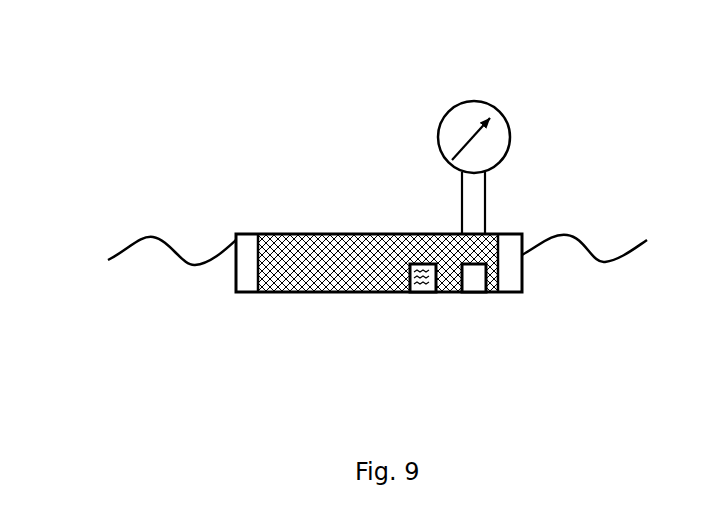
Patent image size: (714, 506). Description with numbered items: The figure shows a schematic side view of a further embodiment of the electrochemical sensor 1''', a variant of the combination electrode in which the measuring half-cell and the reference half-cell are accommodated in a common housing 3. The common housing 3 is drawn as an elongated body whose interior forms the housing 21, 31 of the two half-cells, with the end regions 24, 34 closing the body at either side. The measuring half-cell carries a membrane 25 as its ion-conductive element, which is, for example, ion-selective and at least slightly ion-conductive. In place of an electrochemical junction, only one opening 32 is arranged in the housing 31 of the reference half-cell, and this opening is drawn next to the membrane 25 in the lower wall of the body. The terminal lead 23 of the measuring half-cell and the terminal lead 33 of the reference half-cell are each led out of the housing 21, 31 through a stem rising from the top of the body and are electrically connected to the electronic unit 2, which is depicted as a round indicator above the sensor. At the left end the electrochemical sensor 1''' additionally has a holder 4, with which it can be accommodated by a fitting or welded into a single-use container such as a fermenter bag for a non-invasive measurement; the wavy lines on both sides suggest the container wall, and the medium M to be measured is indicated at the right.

The electrochemical sensor 1''' is at (345, 194).
The electronic unit 2 is at (432, 132).
The common housing 3 is at (292, 297).
The holder 4 is at (235, 240).
The housing of the measuring half-cell 21 is at (374, 234).
The housing of the reference half-cell 31 is at (357, 238).
The terminal lead of the measuring half-cell 23 is at (461, 215).
The terminal lead of the reference half-cell 33 is at (487, 215).
The first end closure 24 is at (367, 218).
The second end closure 34 is at (282, 243).
The membrane 25 is at (420, 297).
The opening 32 is at (470, 297).
The medium M is at (629, 297).